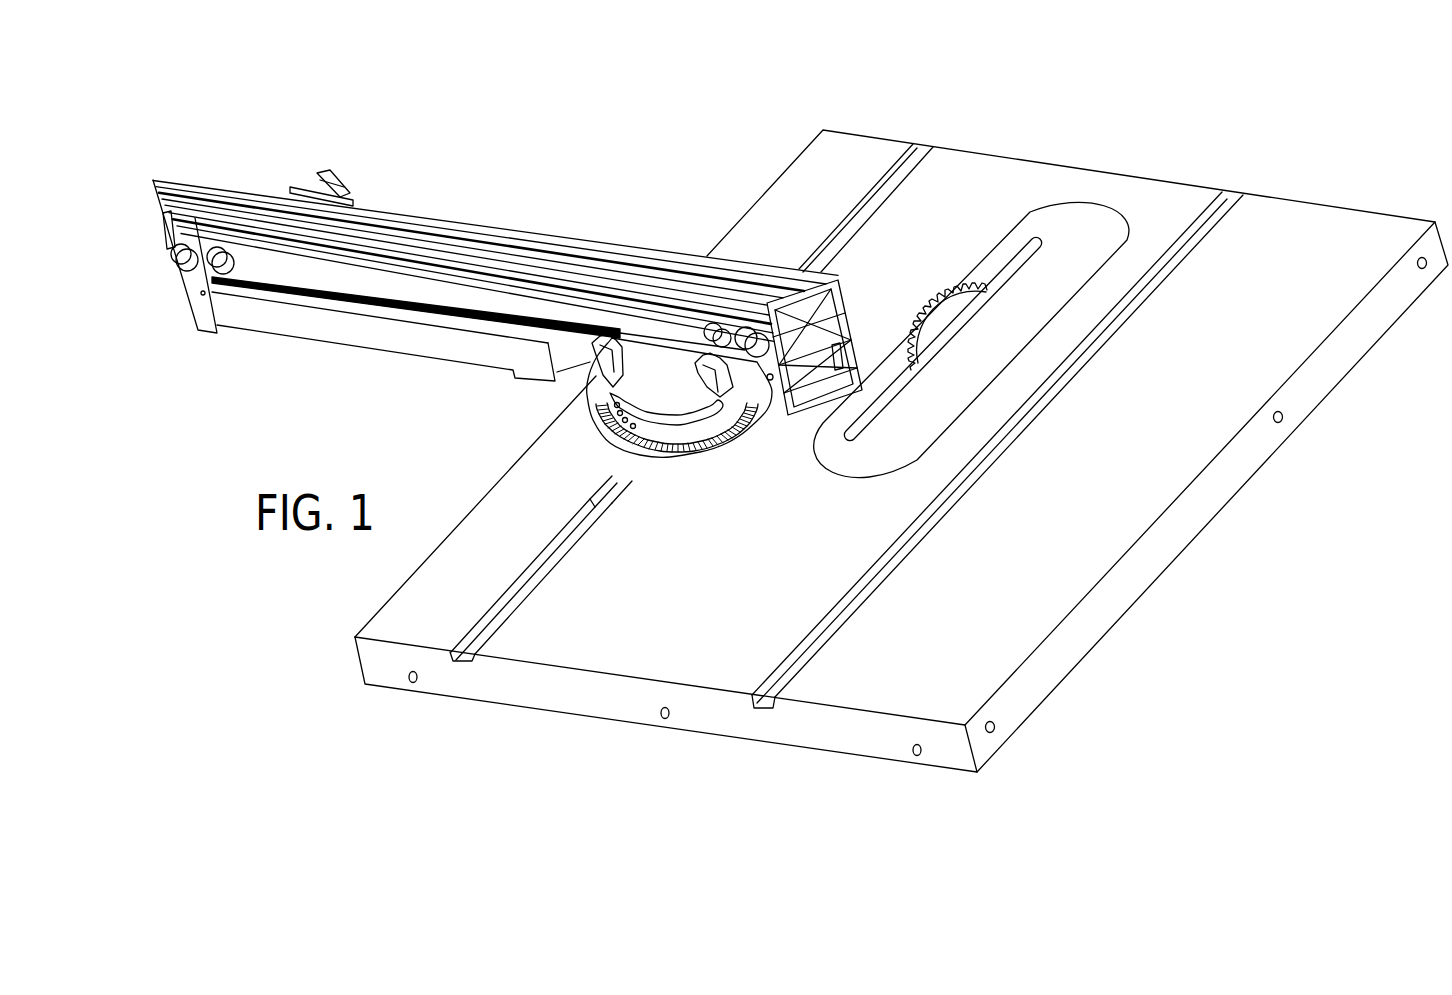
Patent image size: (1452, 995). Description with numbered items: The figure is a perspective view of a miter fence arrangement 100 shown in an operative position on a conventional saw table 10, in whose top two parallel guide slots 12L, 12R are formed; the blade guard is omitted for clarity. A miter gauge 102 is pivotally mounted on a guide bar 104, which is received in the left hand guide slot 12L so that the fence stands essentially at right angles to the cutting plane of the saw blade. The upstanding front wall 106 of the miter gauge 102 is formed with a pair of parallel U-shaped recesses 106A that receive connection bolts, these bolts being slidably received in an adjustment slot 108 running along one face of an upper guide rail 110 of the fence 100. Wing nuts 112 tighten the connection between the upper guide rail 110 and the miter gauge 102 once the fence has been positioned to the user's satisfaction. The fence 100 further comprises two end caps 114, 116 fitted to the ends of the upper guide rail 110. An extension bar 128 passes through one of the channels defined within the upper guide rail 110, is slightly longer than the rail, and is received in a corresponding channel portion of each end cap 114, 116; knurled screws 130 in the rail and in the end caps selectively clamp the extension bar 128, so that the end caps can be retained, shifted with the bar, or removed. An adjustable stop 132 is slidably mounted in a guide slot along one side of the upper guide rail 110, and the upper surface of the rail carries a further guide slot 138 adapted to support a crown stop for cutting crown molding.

The saw table 10 is at (901, 444).
The left hand guide slot 12L is at (462, 660).
The right hand guide slot 12R is at (767, 710).
The miter fence arrangement 100 is at (381, 118).
The miter gauge 102 is at (612, 447).
The guide bar 104 is at (908, 168).
The upstanding front wall 106 is at (625, 419).
The U-shaped recesses 106A is at (588, 420).
The adjustment slot 108 is at (287, 290).
The upper guide rail 110 is at (495, 259).
The wing nuts 112 is at (722, 355).
The end cap 114 is at (800, 273).
The end cap 116 is at (192, 178).
The extension bar 128 is at (827, 325).
The knurled screws 130 is at (222, 252).
The adjustable stop 132 is at (305, 192).
The guide slot 138 is at (455, 243).